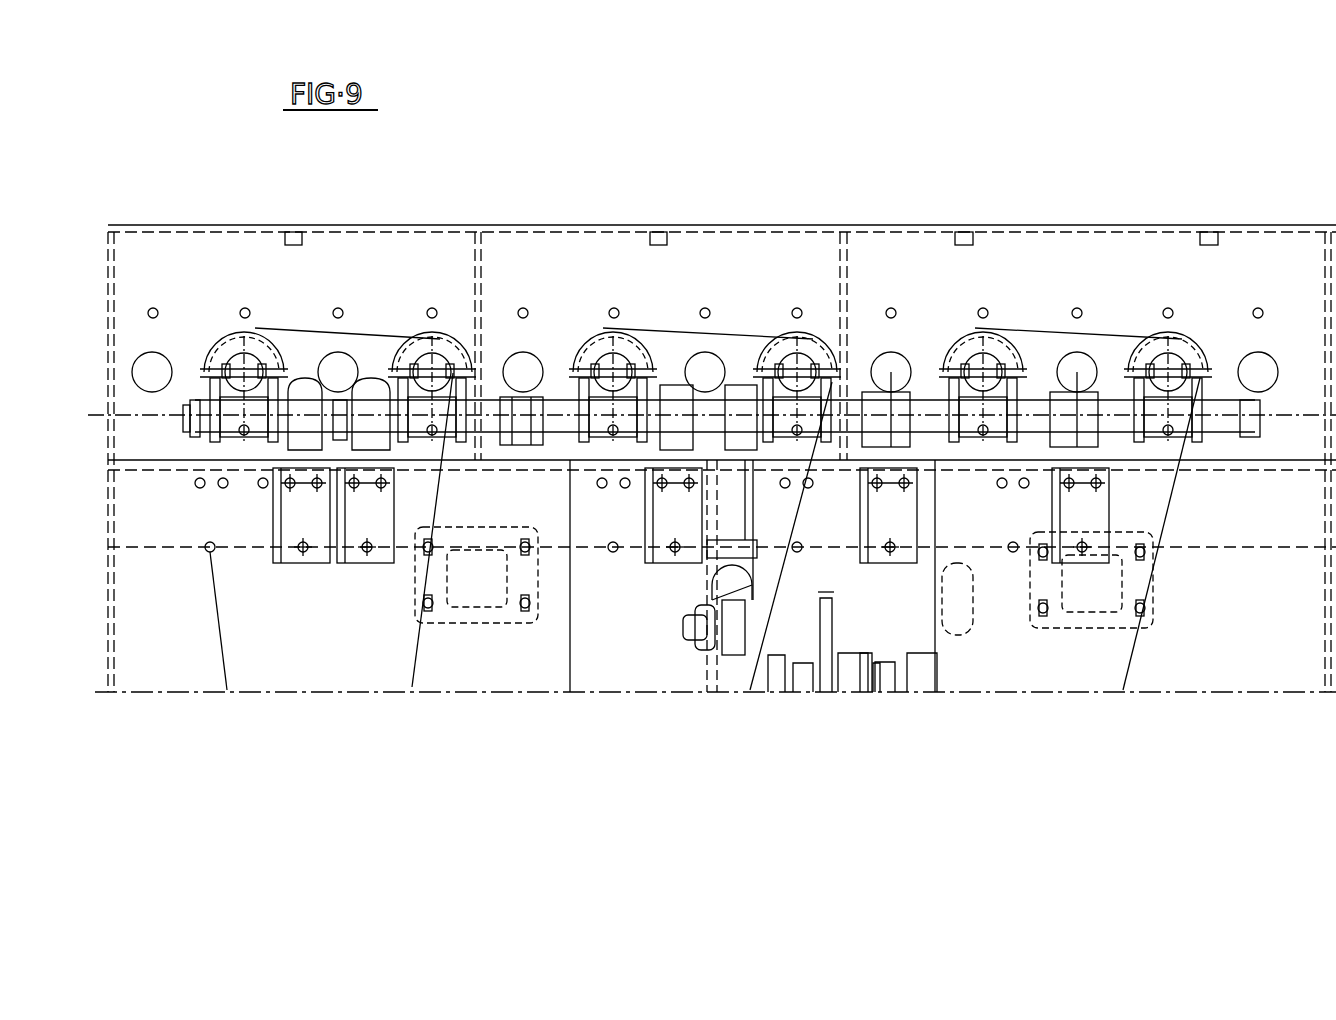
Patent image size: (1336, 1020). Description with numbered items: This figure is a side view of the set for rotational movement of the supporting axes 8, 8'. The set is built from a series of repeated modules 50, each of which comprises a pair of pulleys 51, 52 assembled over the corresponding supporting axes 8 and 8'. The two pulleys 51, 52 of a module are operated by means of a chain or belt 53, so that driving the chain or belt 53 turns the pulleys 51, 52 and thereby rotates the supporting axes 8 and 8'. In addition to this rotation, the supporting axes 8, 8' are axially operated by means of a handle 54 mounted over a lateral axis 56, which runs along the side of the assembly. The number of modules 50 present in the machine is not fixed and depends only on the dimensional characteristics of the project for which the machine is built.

The pulley 51 is at (250, 343).
The supporting axis 8 is at (281, 322).
The pulley 52 is at (443, 357).
The supporting axis 8' is at (478, 321).
The lateral axis 56 is at (197, 425).
The handle 54 is at (258, 432).
The chain or belt 53 is at (217, 612).
The module 50 is at (328, 665).